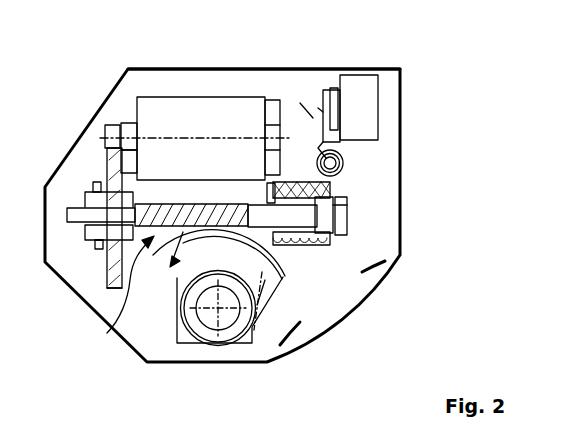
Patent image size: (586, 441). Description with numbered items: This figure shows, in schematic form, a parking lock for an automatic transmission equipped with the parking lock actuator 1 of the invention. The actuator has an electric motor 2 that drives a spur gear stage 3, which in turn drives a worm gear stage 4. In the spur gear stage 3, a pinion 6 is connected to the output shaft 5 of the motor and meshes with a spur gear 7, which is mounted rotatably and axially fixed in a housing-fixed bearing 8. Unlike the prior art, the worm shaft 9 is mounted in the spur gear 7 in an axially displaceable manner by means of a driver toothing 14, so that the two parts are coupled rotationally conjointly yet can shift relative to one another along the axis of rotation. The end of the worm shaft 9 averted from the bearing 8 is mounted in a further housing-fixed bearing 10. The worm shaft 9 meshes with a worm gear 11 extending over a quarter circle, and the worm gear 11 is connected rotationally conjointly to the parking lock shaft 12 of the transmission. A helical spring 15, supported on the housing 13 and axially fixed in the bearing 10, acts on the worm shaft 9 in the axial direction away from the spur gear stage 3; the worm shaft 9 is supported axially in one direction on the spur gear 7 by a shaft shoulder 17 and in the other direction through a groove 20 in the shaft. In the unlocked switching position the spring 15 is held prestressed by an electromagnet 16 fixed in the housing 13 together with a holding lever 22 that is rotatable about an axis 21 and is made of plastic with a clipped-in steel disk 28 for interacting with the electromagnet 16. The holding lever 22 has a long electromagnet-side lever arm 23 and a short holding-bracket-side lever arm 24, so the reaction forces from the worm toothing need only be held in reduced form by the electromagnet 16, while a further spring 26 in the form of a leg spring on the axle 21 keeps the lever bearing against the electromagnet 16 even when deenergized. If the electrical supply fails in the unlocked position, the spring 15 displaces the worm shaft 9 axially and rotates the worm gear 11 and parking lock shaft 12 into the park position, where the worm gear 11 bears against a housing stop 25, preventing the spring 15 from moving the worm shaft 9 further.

The parking lock actuator 1 is at (480, 117).
The electric motor 2 is at (200, 108).
The spur gear stage 3 is at (101, 165).
The worm gear stage 4 is at (110, 326).
The output shaft 5 is at (135, 132).
The pinion 6 is at (105, 135).
The spur gear 7 is at (107, 285).
The bearing 8 is at (93, 245).
The worm shaft 9 is at (160, 204).
The bearing 10 is at (348, 221).
The worm gear 11 is at (290, 337).
The parking lock shaft 12 is at (213, 325).
The housing 13 is at (401, 97).
The driver toothing 14 is at (65, 206).
The spring 15 is at (325, 242).
The electromagnet 16 is at (358, 78).
The shaft shoulder 17 is at (153, 205).
The groove 20 is at (378, 268).
The axis 21 is at (342, 176).
The holding lever 22 is at (314, 119).
The electromagnet-side lever arm 23 is at (304, 110).
The holding-bracket-side lever arm 24 is at (345, 186).
The housing stop 25 is at (296, 300).
The further spring 26 is at (343, 153).
The steel disk 28 is at (330, 90).